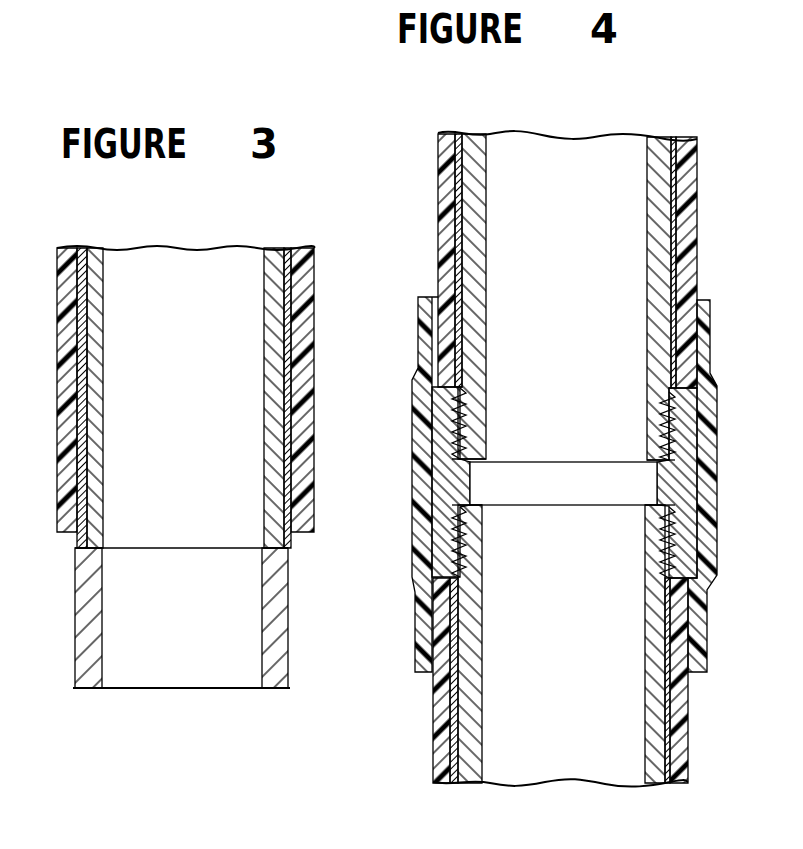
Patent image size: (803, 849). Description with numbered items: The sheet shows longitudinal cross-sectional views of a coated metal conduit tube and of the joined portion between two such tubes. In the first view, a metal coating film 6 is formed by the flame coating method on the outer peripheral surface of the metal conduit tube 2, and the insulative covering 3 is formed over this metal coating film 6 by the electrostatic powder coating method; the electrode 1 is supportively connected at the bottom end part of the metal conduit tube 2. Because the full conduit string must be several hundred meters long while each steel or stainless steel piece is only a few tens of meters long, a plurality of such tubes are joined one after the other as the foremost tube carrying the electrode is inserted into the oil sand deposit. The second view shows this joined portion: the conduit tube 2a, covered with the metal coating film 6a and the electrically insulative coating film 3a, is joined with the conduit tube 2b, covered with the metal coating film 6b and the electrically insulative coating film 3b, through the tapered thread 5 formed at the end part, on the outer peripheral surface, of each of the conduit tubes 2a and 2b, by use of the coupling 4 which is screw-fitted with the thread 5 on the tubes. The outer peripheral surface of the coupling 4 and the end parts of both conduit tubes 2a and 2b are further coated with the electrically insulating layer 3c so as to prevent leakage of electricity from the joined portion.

In FIG. 3, the electrode 1 is at (273, 606).
In FIG. 3, the metal conduit tube 2 is at (273, 349).
In FIG. 3, the insulative covering 3 is at (300, 470).
In FIG. 3, the metal coating film 6 is at (301, 404).
In FIG. 4, the conduit tube 2a is at (660, 194).
In FIG. 4, the metal coating film 6a is at (678, 250).
In FIG. 4, the electrically insulative coating film 3a is at (680, 278).
In FIG. 4, the coupling 4 is at (690, 488).
In FIG. 4, the tapered thread 5 is at (673, 413).
In FIG. 4, the electrically insulating layer 3c is at (697, 551).
In FIG. 4, the conduit tube 2b is at (652, 726).
In FIG. 4, the metal coating film 6b is at (668, 700).
In FIG. 4, the electrically insulative coating film 3b is at (678, 777).